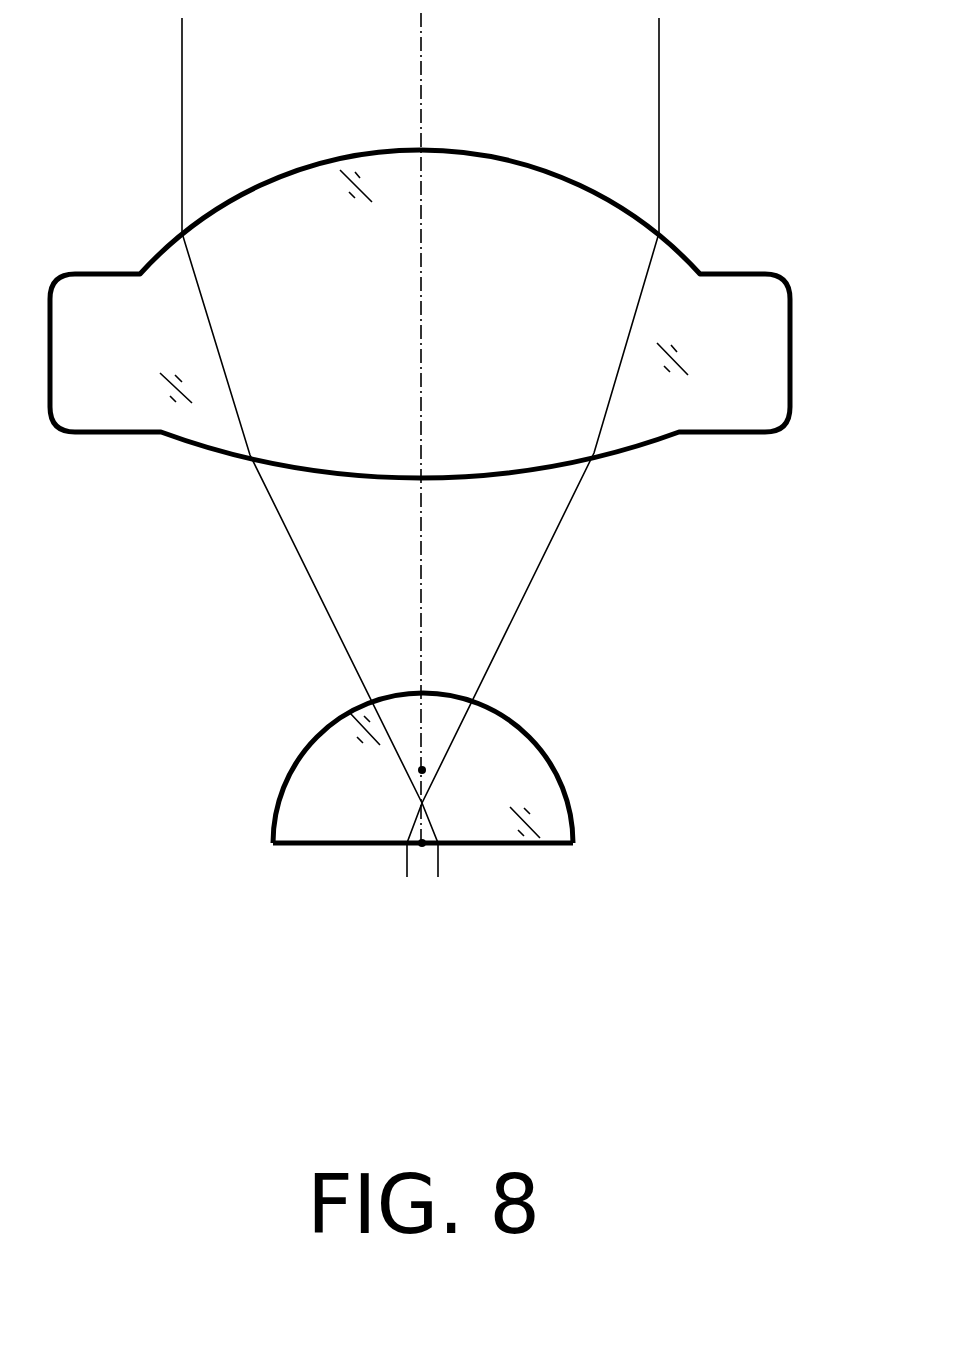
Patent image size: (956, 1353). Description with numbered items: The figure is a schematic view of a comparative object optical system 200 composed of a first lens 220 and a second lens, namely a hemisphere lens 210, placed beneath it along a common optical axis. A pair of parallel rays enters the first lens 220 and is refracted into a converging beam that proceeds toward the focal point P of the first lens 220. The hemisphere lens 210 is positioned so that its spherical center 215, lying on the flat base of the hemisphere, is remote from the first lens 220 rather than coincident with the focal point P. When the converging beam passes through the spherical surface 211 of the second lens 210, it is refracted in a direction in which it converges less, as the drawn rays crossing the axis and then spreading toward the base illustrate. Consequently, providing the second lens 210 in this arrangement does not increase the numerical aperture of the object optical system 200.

The object optical system 200 is at (690, 585).
The first lens 220 is at (675, 285).
The second lens (hemisphere lens) 210 is at (417, 804).
The spherical surface 211 is at (310, 740).
The spherical center 215 is at (422, 846).
The focal point P is at (422, 770).